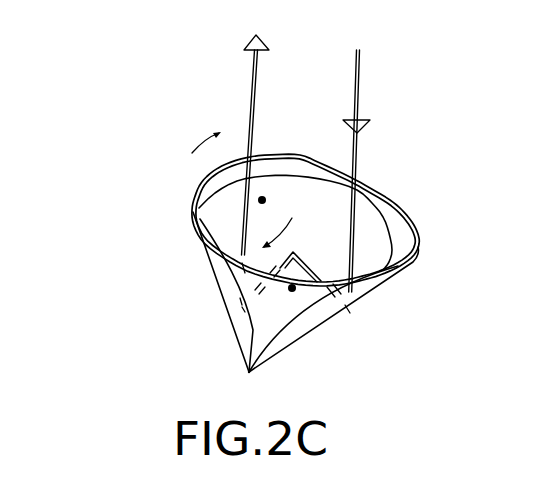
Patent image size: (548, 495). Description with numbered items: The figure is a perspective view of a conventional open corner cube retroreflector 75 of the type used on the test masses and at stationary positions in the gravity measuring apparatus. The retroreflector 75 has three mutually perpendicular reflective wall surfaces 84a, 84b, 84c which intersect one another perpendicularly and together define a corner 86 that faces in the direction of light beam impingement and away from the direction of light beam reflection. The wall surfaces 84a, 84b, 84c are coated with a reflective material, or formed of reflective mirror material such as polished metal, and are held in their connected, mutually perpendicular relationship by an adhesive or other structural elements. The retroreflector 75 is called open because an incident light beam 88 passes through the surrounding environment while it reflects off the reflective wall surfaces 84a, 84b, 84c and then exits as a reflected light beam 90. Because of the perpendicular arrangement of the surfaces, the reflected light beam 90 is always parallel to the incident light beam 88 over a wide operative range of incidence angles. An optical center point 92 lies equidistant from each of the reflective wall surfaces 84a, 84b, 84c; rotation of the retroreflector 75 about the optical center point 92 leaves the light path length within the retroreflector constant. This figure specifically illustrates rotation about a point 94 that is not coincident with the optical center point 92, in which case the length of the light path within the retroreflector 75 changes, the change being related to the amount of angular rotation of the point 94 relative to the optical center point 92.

The retroreflector 75 is at (178, 207).
The reflective wall surface 84a is at (223, 277).
The reflective wall surface 84b is at (345, 313).
The reflective wall surface 84c is at (316, 177).
The corner 86 is at (251, 372).
The incident light beam 88 is at (359, 73).
The reflected light beam 90 is at (253, 73).
The optical center point 92 is at (291, 289).
The point 94 is at (260, 199).